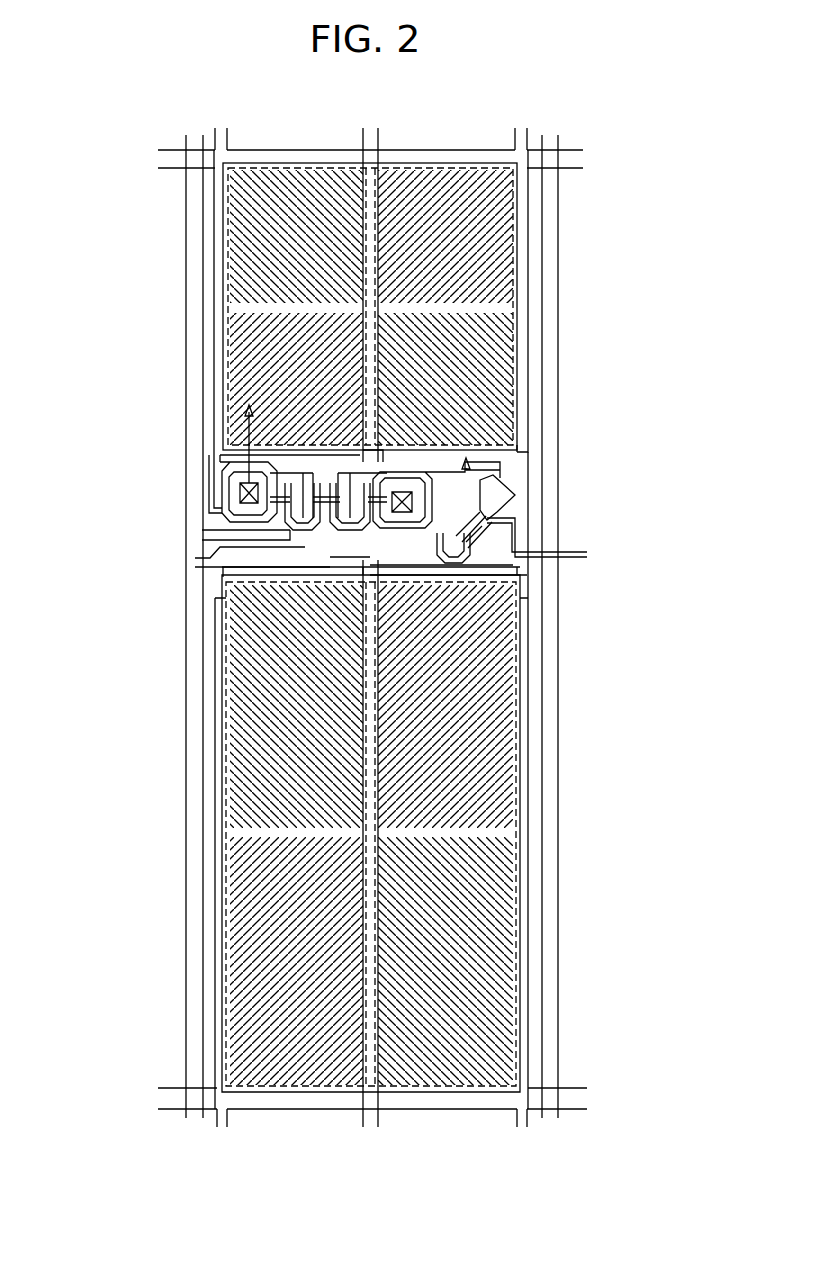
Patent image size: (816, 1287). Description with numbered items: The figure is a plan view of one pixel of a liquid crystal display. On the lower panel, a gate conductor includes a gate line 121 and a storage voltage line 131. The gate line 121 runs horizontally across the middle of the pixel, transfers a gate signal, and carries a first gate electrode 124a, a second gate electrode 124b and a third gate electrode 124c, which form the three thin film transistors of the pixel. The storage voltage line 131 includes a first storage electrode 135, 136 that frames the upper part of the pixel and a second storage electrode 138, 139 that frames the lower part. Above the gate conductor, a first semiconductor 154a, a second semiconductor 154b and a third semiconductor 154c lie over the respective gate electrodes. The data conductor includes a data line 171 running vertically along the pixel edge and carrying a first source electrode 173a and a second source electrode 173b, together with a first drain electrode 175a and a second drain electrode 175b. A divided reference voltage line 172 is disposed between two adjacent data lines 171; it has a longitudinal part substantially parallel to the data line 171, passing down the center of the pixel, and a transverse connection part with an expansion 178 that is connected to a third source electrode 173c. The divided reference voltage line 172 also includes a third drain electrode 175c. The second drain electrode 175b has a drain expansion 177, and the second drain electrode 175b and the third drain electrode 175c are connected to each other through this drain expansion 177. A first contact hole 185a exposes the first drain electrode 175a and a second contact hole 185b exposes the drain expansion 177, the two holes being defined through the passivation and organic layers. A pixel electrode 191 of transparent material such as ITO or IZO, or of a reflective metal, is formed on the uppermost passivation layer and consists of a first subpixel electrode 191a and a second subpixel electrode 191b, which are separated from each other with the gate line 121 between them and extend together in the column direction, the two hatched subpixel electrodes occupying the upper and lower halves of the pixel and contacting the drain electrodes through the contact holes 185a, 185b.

The gate line 121 is at (195, 558).
The first gate electrode 124a is at (285, 470).
The second gate electrode 124b is at (350, 490).
The third gate electrode 124c is at (495, 525).
The storage voltage line 131 is at (171, 150).
The first storage electrode 135 is at (528, 322).
The first storage electrode 136 is at (281, 150).
The second storage electrode 138 is at (528, 860).
The second storage electrode 139 is at (467, 1110).
The first semiconductor 154a is at (305, 515).
The second semiconductor 154b is at (335, 502).
The third semiconductor 154c is at (455, 548).
The data line 171 is at (201, 214).
The divided reference voltage line 172 is at (380, 140).
The first source electrode 173a is at (290, 505).
The second source electrode 173b is at (350, 540).
The third source electrode 173c is at (507, 516).
The first drain electrode 175a is at (226, 473).
The second drain electrode 175b is at (337, 530).
The third drain electrode 175c is at (470, 540).
The drain expansion 177 is at (423, 487).
The expansion 178 is at (532, 486).
The first contact hole 185a is at (240, 492).
The second contact hole 185b is at (402, 495).
The pixel electrode 191 is at (654, 983).
The first subpixel electrode 191a is at (222, 281).
The second subpixel electrode 191b is at (222, 746).